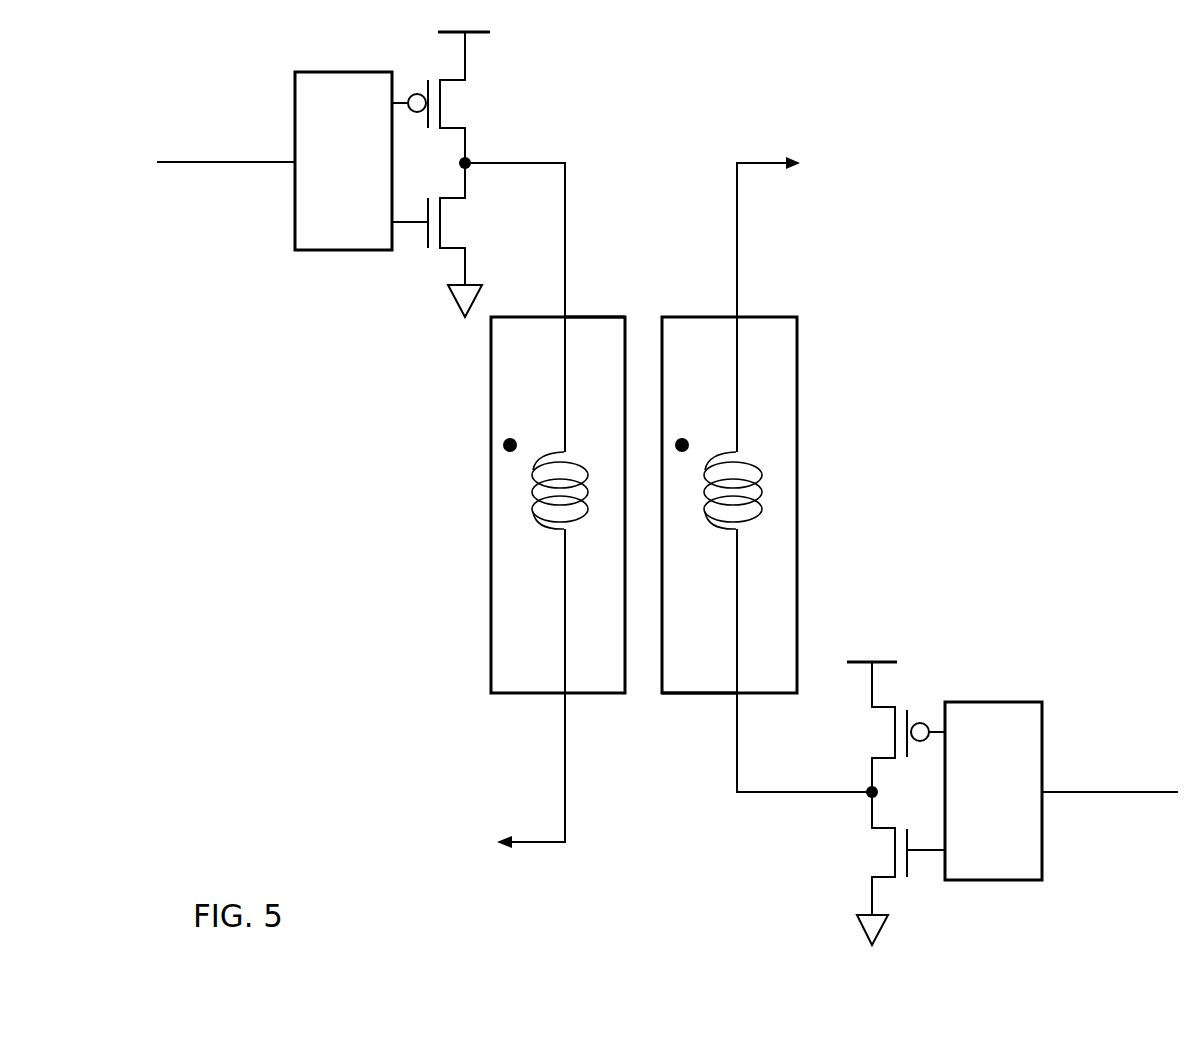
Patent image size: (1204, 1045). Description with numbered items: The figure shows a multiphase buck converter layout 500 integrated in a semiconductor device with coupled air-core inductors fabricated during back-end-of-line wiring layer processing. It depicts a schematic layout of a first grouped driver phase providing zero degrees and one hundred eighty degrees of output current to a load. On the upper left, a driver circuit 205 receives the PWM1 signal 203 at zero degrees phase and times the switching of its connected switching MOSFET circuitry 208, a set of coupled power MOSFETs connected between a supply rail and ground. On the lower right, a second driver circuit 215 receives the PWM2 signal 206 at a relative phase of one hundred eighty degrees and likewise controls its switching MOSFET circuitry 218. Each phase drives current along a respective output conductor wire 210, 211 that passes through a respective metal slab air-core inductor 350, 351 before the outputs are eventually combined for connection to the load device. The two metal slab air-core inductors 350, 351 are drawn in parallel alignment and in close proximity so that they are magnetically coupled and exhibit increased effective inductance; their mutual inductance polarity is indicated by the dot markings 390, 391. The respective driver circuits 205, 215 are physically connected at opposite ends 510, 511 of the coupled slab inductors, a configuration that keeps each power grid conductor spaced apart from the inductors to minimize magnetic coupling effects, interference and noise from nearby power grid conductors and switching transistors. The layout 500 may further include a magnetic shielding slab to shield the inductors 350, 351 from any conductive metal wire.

The multiphase buck converter layout 500 is at (1112, 87).
The PWM1 signal 203 is at (175, 166).
The driver circuit 205 is at (295, 225).
The switching MOSFET circuitry 208 is at (482, 99).
The output conductor wire 210 is at (565, 811).
The output conductor wire 211 is at (737, 247).
The driver circuit 215 is at (993, 702).
The switching MOSFET circuitry 218 is at (845, 860).
The PWM2 signal 206 is at (1116, 796).
The metal slab air-core inductor 350 is at (491, 583).
The metal slab air-core inductor 351 is at (797, 581).
The first inductor polarity dot 390 is at (516, 441).
The mutual inductance polarity 391 is at (688, 441).
The end of coupled slab air-core inductor 510 is at (612, 318).
The end of coupled slab air-core inductor 511 is at (692, 696).